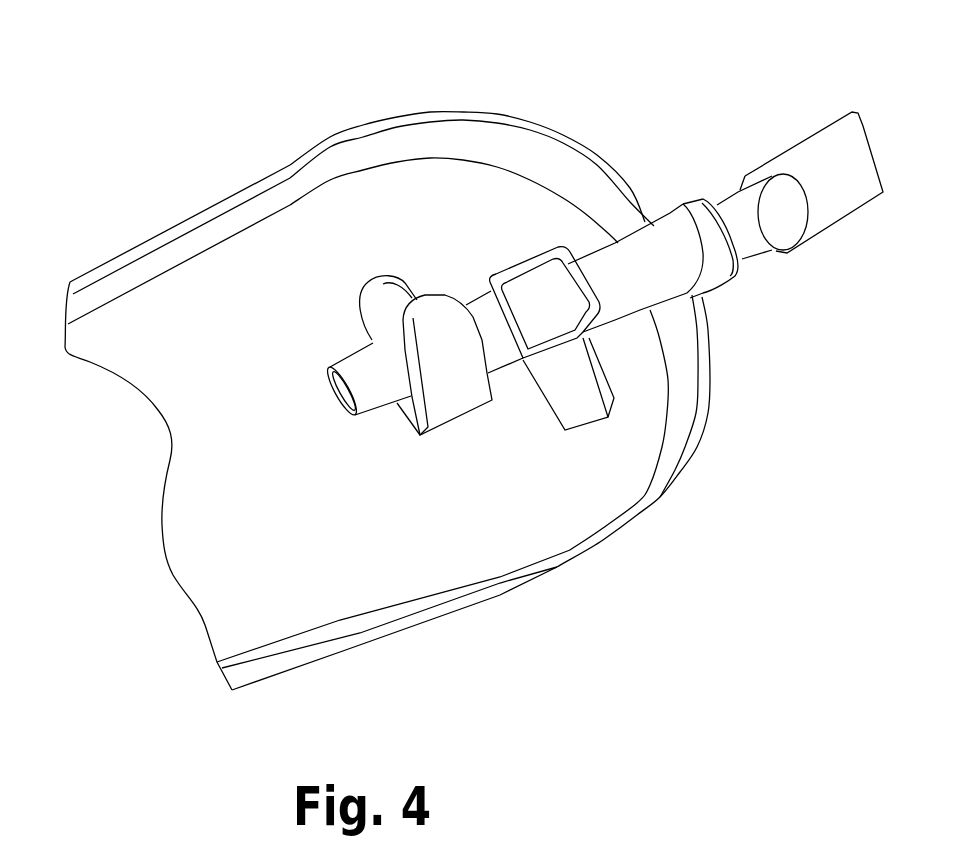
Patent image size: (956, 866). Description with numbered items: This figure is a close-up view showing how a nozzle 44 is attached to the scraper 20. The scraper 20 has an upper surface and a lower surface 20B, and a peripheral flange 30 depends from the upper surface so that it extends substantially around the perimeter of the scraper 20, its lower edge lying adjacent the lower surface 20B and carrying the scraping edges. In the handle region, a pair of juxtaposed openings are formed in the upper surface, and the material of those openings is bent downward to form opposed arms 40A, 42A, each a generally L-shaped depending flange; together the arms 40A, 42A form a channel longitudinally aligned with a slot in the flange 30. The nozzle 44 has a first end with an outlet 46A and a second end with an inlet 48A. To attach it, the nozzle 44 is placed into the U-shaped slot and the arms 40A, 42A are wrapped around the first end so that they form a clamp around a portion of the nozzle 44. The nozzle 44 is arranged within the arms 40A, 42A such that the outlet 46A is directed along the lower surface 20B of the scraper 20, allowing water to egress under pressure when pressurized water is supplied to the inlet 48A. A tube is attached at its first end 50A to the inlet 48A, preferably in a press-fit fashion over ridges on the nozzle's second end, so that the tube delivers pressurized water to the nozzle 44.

The scraper 20 is at (168, 220).
The lower surface 20B is at (190, 456).
The peripheral flange 30 is at (683, 377).
The arm 40A is at (432, 330).
The arm 42A is at (555, 280).
The nozzle 44 is at (668, 208).
The outlet 46A is at (330, 367).
The inlet 48A is at (792, 174).
The first end of tube 50A is at (830, 157).